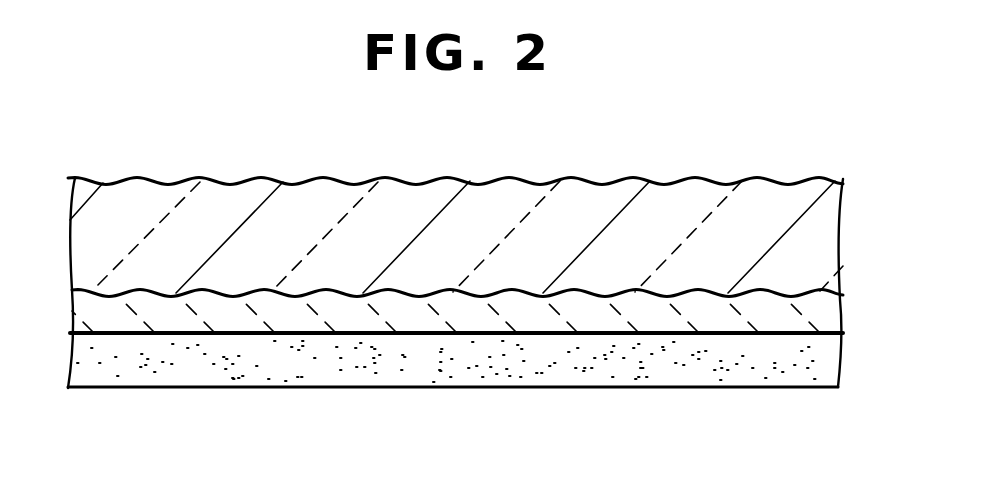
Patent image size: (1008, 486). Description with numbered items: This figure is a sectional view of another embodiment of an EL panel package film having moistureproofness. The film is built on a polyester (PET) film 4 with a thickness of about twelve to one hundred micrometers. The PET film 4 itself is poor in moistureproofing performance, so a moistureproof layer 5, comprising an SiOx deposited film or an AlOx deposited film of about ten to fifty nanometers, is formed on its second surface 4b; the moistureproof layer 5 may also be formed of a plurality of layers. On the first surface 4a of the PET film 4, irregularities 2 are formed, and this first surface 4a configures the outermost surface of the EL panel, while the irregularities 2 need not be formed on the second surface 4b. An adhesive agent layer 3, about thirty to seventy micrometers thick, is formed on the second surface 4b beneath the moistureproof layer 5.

The irregularities 2 is at (473, 181).
The adhesive agent layer 3 is at (458, 369).
The polyester (PET) film 4 is at (812, 232).
The first surface 4a is at (750, 177).
The second surface 4b is at (810, 294).
The moistureproof layer 5 is at (640, 316).